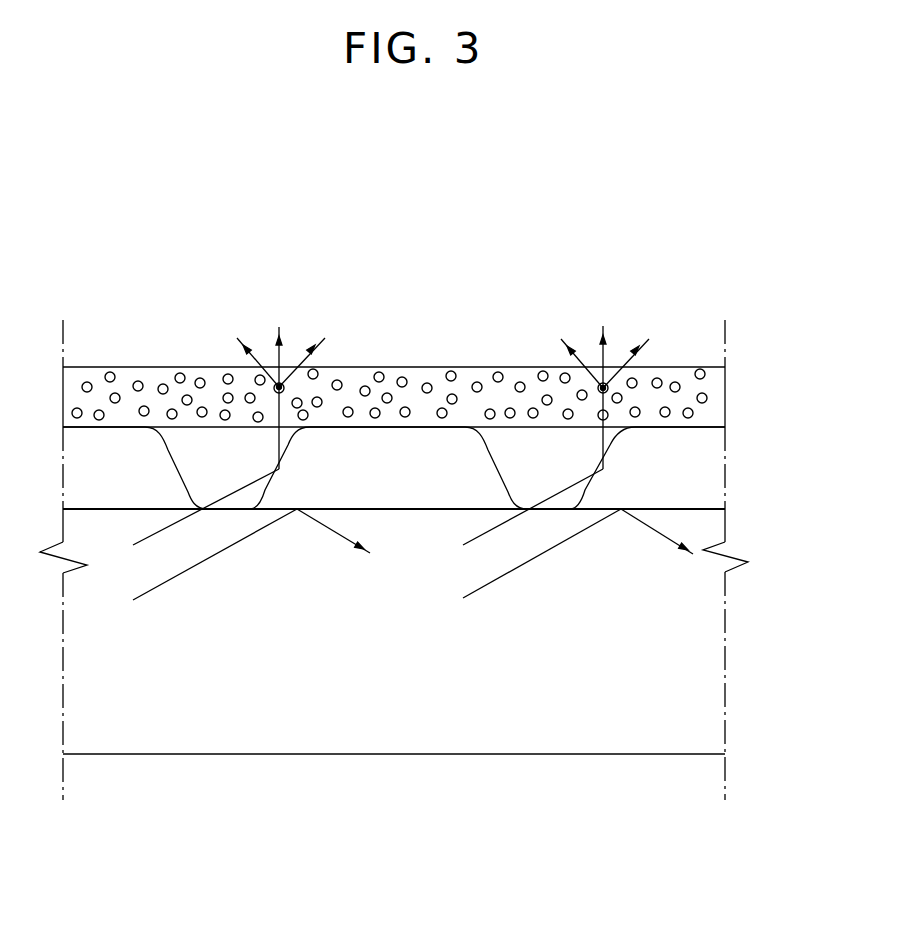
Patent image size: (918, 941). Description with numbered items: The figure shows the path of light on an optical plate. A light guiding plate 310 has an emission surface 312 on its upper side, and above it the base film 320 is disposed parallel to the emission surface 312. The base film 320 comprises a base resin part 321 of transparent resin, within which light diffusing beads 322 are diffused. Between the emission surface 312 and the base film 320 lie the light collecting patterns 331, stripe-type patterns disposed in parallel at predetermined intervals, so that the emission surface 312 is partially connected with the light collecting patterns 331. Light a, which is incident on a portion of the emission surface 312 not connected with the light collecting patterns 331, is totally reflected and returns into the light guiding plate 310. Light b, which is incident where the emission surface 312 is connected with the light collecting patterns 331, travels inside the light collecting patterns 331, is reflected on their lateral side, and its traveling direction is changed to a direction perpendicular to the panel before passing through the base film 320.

The light guiding plate 310 is at (708, 656).
The emission surface 312 is at (703, 508).
The light collecting patterns 331 is at (608, 455).
The base film 320 is at (723, 392).
The base resin part 321 is at (420, 373).
The light diffusing beads 322 is at (498, 372).
The light a is at (405, 560).
The light b is at (358, 513).